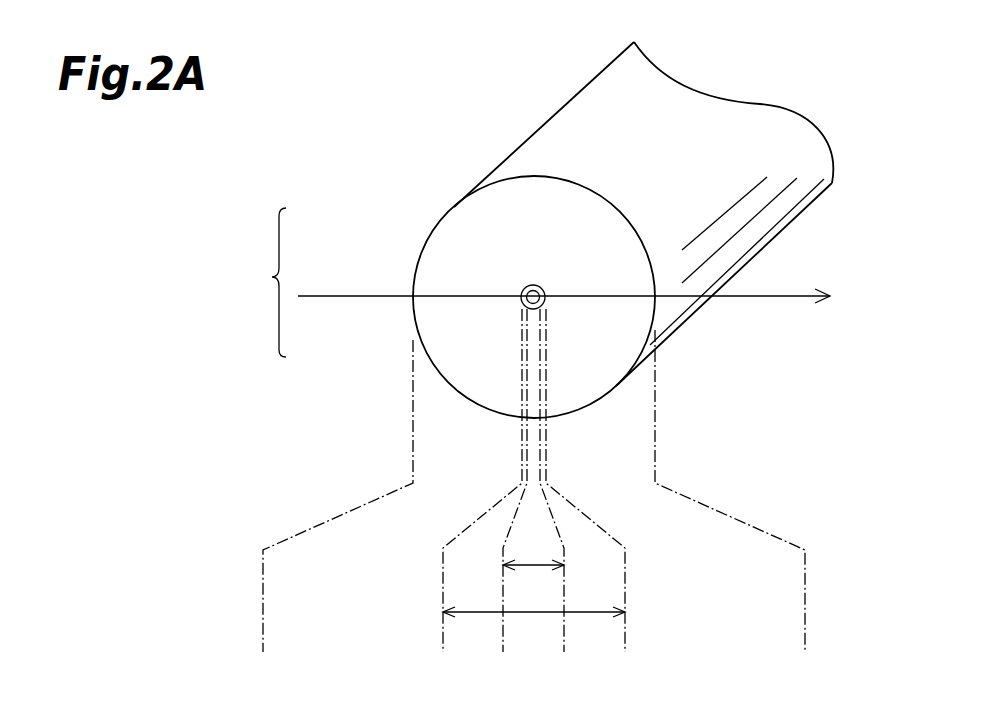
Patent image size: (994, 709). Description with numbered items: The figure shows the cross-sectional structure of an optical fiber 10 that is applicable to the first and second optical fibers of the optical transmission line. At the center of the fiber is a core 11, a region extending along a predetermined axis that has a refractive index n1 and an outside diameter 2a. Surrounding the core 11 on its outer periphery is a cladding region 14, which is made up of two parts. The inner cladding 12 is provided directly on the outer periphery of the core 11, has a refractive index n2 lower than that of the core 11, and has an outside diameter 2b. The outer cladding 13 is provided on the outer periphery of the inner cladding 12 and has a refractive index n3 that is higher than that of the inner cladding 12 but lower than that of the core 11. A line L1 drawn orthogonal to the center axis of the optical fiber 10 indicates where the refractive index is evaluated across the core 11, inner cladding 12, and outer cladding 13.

The optical fiber 10 is at (789, 70).
The core 11 is at (533, 303).
The inner cladding 12 is at (526, 307).
The outer cladding 13 is at (437, 250).
The cladding region 14 is at (517, 430).
The line L1 is at (572, 313).
The outside diameter of the core 2a is at (533, 551).
The outside diameter of the inner cladding 2b is at (534, 627).